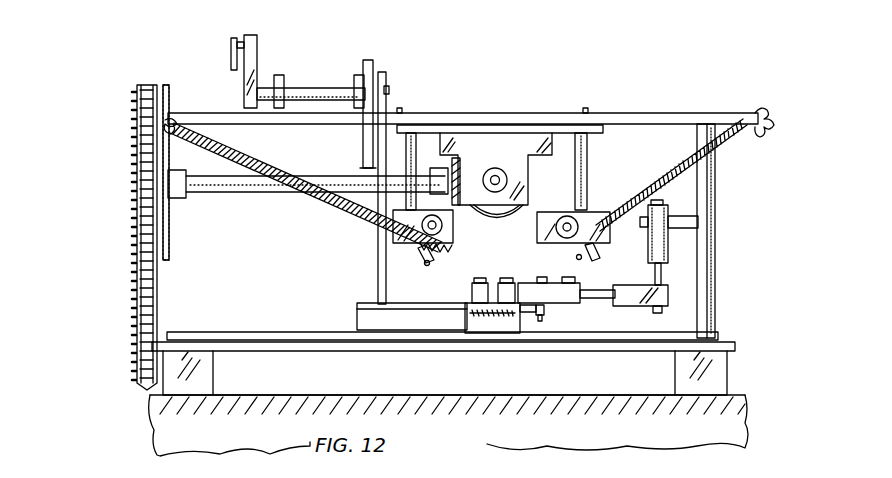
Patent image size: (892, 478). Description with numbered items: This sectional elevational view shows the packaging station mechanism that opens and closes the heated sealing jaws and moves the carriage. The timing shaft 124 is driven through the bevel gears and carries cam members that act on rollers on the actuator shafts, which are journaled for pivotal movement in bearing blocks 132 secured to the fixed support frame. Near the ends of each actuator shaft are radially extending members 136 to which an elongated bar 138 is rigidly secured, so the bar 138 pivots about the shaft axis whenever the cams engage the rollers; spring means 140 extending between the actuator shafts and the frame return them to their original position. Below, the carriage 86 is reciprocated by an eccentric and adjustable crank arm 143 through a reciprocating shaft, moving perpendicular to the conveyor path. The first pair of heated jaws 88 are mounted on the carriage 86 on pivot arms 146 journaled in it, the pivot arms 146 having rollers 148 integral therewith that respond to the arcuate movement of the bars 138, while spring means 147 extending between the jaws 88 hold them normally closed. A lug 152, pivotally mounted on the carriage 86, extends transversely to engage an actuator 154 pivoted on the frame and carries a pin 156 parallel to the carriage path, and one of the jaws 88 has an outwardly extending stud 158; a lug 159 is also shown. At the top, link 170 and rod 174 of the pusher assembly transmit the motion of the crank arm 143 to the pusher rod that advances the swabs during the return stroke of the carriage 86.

The carriage 86 is at (405, 320).
The first pair of heated jaws 88 is at (505, 332).
The timing shaft 124 is at (507, 160).
The bearing blocks 132 is at (398, 234).
The radially extending members 136 is at (424, 253).
The elongated bar 138 is at (424, 266).
The spring means 140 is at (641, 176).
The crank arm 143 is at (392, 100).
The pivot arms 146 is at (470, 297).
The spring means 147 is at (470, 328).
The rollers 148 is at (516, 280).
The lug 152 is at (570, 305).
The actuator 154 is at (587, 302).
The pin 156 is at (548, 322).
The stud 158 is at (530, 315).
The lug 159 is at (563, 281).
The link 170 is at (258, 51).
The rod 174 is at (230, 61).